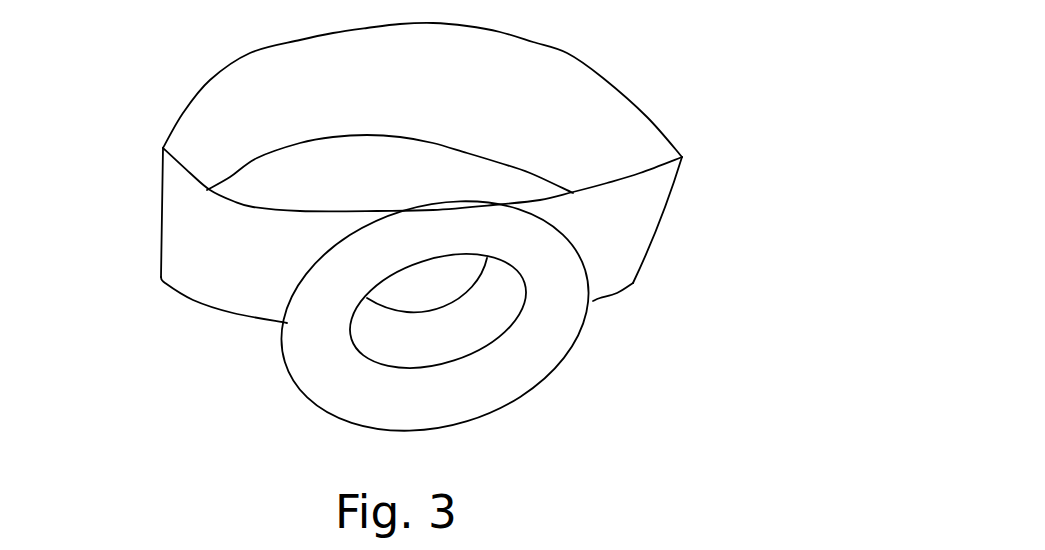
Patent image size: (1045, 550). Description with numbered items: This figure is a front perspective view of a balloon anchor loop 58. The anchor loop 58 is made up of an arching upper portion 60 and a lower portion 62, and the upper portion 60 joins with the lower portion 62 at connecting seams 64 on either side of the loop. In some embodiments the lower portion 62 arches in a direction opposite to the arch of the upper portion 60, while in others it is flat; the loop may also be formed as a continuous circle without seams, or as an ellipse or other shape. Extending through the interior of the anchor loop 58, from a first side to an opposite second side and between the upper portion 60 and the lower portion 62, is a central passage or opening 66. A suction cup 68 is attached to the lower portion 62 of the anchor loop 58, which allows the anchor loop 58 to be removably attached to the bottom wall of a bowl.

The anchor loop 58 is at (560, 75).
The arching upper portion 60 is at (593, 122).
The lower portion 62 is at (613, 218).
The connecting seams 64 is at (157, 197).
The central passage or opening 66 is at (283, 169).
The suction cup 68 is at (520, 353).